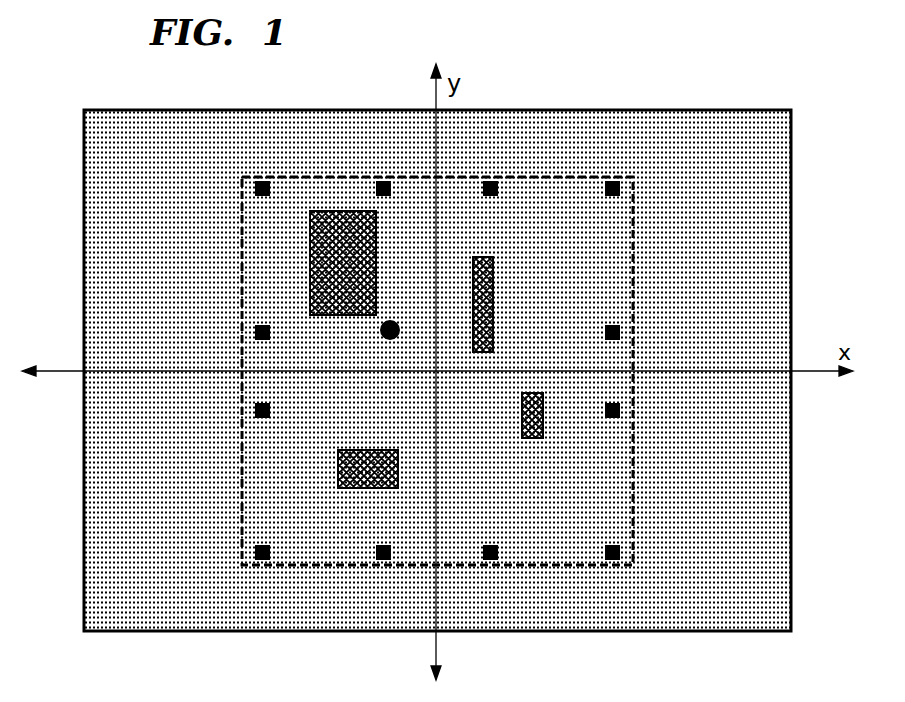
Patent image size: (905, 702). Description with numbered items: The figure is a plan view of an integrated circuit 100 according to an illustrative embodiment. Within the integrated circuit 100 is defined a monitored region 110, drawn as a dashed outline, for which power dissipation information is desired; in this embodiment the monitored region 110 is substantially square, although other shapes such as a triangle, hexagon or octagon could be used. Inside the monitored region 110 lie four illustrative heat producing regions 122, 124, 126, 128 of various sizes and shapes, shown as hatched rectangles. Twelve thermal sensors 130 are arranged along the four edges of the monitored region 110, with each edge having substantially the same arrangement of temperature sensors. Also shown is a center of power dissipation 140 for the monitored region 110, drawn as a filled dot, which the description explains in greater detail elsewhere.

The integrated circuit 100 is at (792, 230).
The monitored region 110 is at (635, 495).
The heat producing region 122 is at (334, 467).
The heat producing region 124 is at (518, 413).
The heat producing region 126 is at (498, 284).
The heat producing region 128 is at (307, 259).
The thermal sensors 130 is at (621, 410).
The center of power dissipation 140 is at (380, 334).